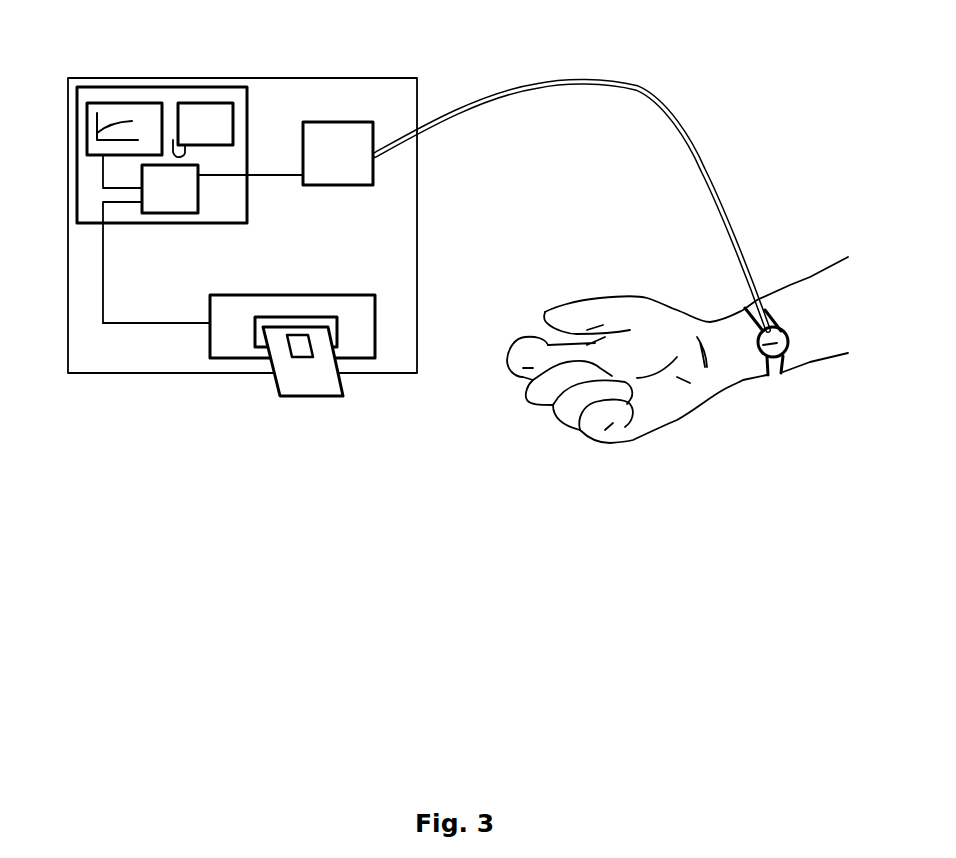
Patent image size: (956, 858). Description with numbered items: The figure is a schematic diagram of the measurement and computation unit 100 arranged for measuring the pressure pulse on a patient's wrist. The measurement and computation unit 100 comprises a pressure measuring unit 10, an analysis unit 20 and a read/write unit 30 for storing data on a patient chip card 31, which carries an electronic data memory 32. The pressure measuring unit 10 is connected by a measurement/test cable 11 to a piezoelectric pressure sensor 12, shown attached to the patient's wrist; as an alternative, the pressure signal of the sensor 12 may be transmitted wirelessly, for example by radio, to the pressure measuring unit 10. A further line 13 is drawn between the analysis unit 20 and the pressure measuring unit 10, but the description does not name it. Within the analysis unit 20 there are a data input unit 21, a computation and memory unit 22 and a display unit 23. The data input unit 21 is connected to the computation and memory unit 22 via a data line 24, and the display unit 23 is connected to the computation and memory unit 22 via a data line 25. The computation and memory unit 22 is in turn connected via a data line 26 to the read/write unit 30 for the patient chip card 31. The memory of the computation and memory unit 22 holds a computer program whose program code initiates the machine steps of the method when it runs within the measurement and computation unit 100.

The measurement and computation unit 100 is at (152, 357).
The analysis unit 20 is at (238, 95).
The display unit 23 is at (103, 113).
The data line 24 is at (173, 145).
The data input unit 21 is at (205, 113).
The computation and memory unit 22 is at (167, 205).
The data line 25 is at (102, 171).
The data line 26 is at (107, 290).
The signal line 13 is at (263, 175).
The pressure measuring unit 10 is at (363, 170).
The measurement/test cable 11 is at (673, 140).
The piezoelectric pressure sensor 12 is at (762, 352).
The read/write unit 30 is at (358, 320).
The patient chip card 31 is at (313, 383).
The electronic data memory 32 is at (300, 347).